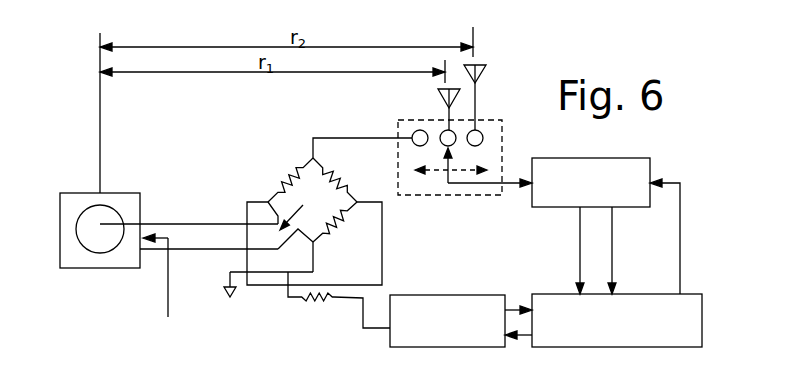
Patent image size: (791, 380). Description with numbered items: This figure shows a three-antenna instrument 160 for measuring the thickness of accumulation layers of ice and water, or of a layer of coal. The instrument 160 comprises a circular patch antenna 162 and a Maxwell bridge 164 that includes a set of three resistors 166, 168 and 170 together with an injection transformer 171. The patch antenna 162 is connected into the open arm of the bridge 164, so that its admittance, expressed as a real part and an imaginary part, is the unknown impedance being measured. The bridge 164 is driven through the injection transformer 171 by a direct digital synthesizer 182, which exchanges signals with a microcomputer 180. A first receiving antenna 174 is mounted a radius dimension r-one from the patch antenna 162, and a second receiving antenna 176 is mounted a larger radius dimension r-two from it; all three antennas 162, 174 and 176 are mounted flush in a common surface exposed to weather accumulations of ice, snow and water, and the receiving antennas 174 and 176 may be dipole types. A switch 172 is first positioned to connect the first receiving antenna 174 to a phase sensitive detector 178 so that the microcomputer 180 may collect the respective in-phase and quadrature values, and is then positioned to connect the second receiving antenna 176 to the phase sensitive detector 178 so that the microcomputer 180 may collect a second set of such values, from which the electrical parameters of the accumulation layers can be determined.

The instrument 160 is at (201, 140).
The circular patch antenna 162 is at (75, 192).
The Maxwell bridge 164 is at (297, 146).
The resistor 166 is at (288, 170).
The resistor 168 is at (342, 170).
The resistor 170 is at (339, 229).
The injection transformer 171 is at (316, 299).
The switch 172 is at (468, 195).
The first receiving antenna 174 is at (438, 98).
The second receiving antenna 176 is at (486, 70).
The phase sensitive detector 178 is at (580, 158).
The microcomputer 180 is at (698, 294).
The direct digital synthesizer 182 is at (477, 295).